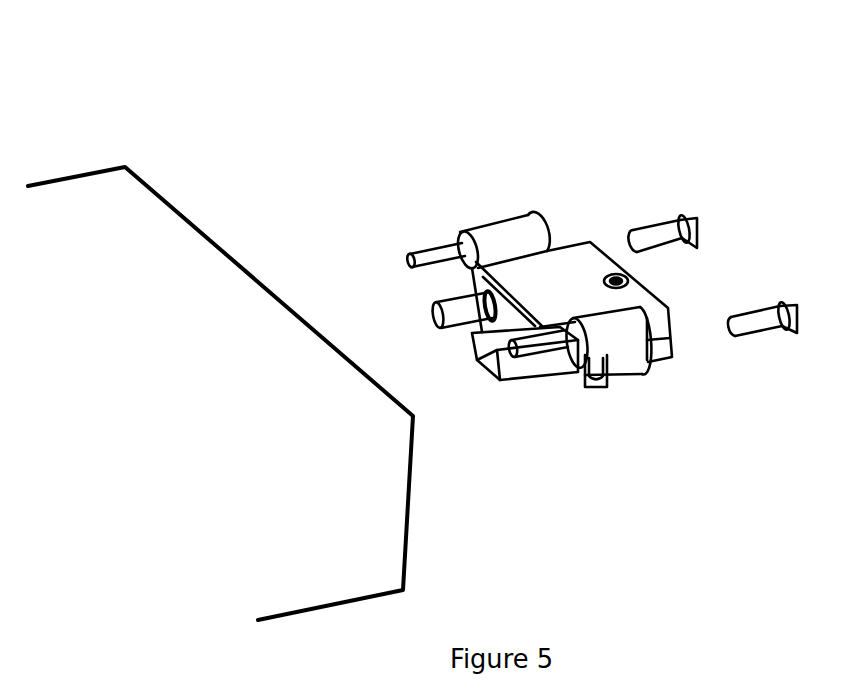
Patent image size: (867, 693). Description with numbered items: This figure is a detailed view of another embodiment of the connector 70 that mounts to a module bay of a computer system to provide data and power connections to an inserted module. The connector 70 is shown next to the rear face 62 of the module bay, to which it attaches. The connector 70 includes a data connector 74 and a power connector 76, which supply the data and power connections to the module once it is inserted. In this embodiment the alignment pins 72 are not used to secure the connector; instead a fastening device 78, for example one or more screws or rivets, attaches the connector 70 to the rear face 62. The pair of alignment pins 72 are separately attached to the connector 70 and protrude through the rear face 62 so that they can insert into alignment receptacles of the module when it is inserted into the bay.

The rear face 62 is at (82, 172).
The connector 70 is at (464, 156).
The alignment pins 72 is at (418, 250).
The data connector 74 is at (486, 372).
The power connector 76 is at (432, 315).
The fastening device 78 is at (692, 230).